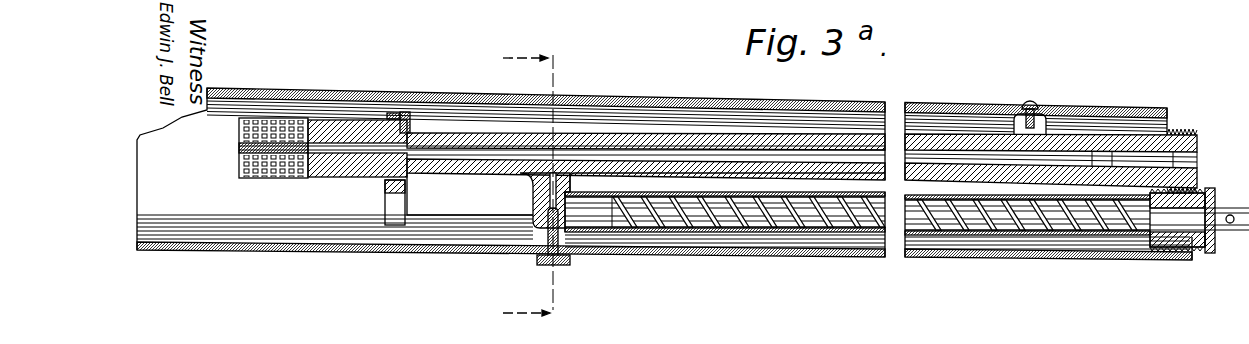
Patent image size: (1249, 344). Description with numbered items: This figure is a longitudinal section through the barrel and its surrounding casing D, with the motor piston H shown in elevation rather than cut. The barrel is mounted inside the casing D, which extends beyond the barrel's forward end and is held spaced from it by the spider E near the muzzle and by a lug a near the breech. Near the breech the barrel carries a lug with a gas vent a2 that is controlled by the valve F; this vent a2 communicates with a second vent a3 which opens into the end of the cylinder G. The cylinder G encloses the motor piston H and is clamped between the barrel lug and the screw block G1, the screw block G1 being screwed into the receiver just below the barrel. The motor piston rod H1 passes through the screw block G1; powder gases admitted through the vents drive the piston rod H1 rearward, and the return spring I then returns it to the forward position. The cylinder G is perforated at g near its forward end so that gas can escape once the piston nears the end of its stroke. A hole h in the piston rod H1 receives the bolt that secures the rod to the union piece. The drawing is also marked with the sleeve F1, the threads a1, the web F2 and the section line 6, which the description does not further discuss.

The casing D is at (431, 98).
The threaded sleeve F1 is at (287, 120).
The screw threads of sleeve a1 is at (370, 118).
The spider E is at (393, 212).
The valve F is at (718, 135).
The web of inner tube F2 is at (533, 201).
The gas vent a2 is at (548, 212).
The vent a3 is at (560, 210).
The motor piston H is at (607, 230).
The motor piston rod H1 is at (953, 238).
The cylinder G is at (777, 233).
The return spring I is at (865, 203).
The perforation g is at (882, 233).
The screw block G1 is at (1170, 240).
The hole h is at (1233, 226).
The lug a is at (1022, 106).
The section line 6- 6 is at (535, 185).